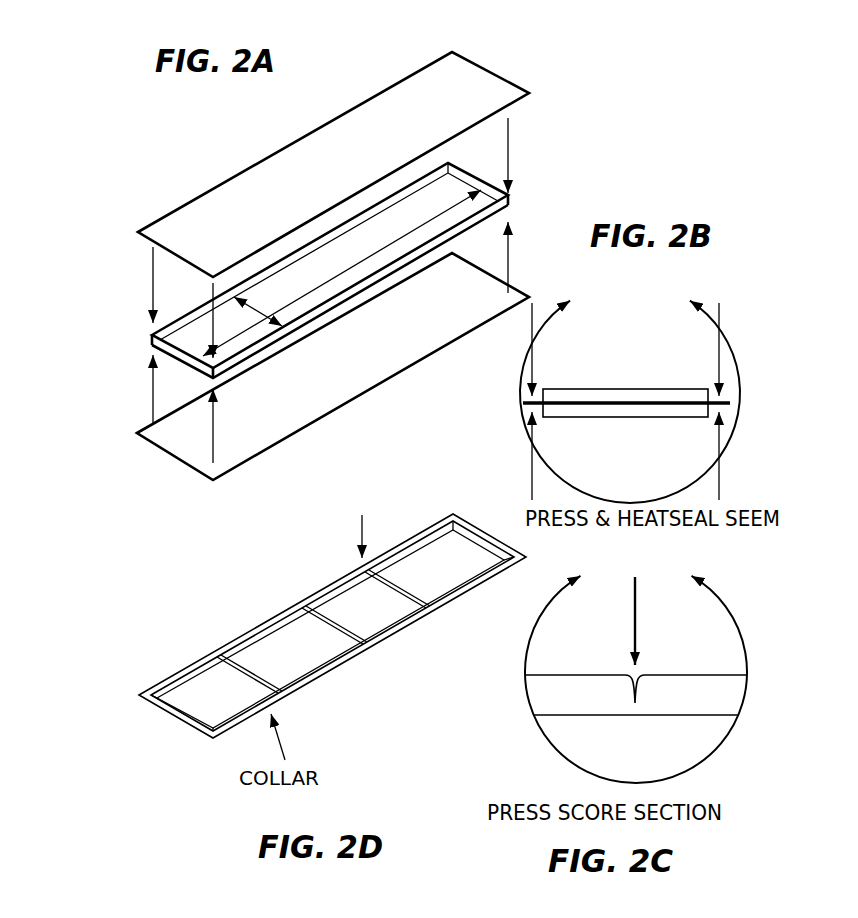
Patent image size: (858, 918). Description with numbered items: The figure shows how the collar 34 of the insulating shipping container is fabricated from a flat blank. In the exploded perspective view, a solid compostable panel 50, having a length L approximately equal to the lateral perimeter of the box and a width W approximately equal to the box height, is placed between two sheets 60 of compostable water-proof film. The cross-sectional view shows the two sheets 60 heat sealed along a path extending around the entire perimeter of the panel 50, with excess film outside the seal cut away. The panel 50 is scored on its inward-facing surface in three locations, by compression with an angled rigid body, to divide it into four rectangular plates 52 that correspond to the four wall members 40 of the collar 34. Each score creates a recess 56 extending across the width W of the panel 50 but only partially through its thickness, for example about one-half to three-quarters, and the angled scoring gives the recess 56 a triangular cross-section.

In FIG. 2D, the collar 34 is at (175, 633).
In FIG. 2D, the wall member 40 is at (177, 673).
In FIG. 2A, the panel 50 is at (212, 357).
In FIG. 2B, the panel 50 is at (665, 396).
In FIG. 2C, the plate 52 is at (598, 675).
In FIG. 2D, the plate 52 is at (207, 698).
In FIG. 2C, the recess 56 is at (637, 672).
In FIG. 2D, the recess 56 is at (279, 697).
In FIG. 2A, the sheet 60 is at (202, 218).
In FIG. 2B, the sheet 60 is at (731, 400).